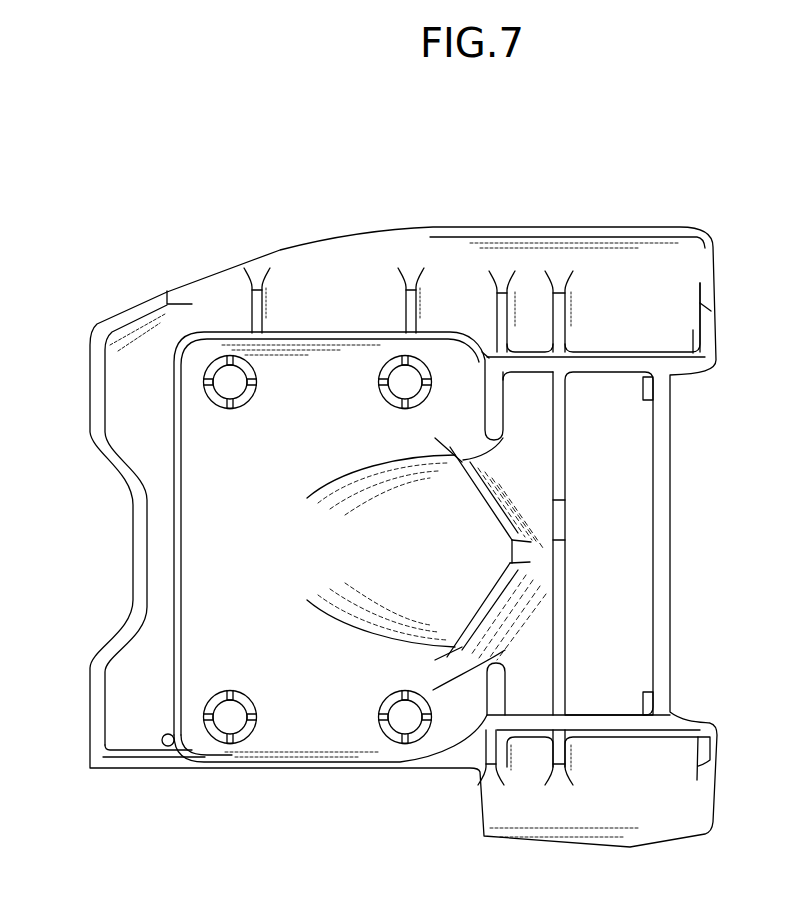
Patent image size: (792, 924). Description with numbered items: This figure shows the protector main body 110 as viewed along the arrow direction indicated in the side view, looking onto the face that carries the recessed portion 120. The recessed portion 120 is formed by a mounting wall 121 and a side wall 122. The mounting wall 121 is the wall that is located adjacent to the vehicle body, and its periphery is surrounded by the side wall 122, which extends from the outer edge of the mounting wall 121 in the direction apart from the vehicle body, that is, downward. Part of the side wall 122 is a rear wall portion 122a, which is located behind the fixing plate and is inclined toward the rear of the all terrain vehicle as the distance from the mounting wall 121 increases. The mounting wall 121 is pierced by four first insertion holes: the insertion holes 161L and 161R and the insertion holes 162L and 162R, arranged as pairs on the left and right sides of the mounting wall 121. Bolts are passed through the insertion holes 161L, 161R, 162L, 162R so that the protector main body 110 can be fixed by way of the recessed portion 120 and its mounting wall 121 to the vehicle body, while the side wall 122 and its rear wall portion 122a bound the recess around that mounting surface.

The protector main body 110 is at (674, 209).
The recessed portion 120 is at (170, 667).
The mounting wall 121 is at (310, 722).
The side wall 122 is at (315, 332).
The rear wall portion 122a is at (440, 553).
The insertion hole 161R is at (232, 378).
The insertion hole 162R is at (414, 372).
The insertion hole 161L is at (236, 742).
The insertion hole 162L is at (400, 742).